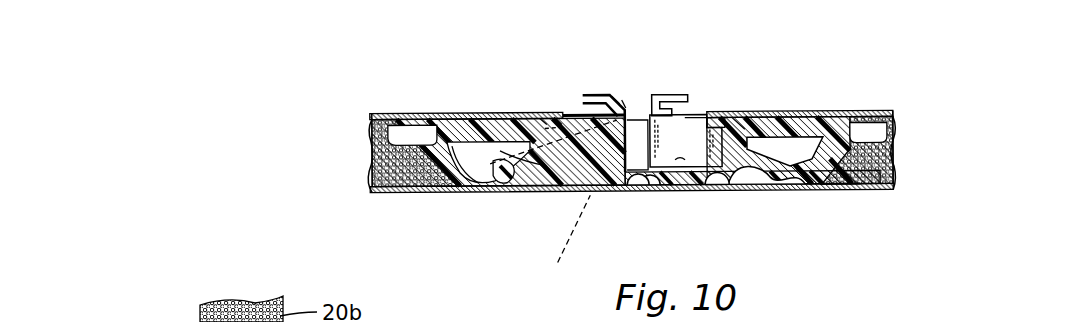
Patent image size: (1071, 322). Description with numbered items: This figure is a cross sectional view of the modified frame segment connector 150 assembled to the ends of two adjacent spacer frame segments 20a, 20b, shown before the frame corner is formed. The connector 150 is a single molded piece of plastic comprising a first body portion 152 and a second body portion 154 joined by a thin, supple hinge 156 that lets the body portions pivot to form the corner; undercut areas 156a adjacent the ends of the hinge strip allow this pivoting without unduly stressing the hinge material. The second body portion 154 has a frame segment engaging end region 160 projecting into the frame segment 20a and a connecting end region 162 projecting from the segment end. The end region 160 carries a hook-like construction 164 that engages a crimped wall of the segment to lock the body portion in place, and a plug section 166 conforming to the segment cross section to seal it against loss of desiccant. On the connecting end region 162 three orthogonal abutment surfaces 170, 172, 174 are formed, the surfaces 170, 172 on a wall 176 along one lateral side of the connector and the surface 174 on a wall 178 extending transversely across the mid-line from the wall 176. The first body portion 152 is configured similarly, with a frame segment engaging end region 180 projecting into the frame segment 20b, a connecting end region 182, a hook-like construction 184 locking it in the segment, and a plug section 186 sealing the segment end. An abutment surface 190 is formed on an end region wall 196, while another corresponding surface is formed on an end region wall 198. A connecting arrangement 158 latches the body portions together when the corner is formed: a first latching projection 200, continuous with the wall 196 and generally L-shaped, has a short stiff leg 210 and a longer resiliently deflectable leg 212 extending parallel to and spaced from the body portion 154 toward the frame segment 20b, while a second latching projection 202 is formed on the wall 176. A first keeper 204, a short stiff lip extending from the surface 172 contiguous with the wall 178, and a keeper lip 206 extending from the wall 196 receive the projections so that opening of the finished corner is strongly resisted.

The spacer frame segment 20a is at (842, 112).
The spacer frame segment 20b is at (415, 112).
The frame segment connector 150 is at (682, 54).
The first body portion 152 is at (565, 197).
The second body portion 154 is at (705, 195).
The hinge 156 is at (657, 190).
The undercut areas 156a is at (636, 192).
The connecting arrangement 158 is at (617, 81).
The frame segment engaging end region 160 is at (865, 112).
The connecting end region 162 is at (740, 115).
The hook-like construction 164 is at (827, 192).
The plug section 166 is at (732, 182).
The abutment surface 170 is at (637, 150).
The abutment surface 172 is at (686, 140).
The abutment surface 174 is at (712, 162).
The wall 176 is at (687, 123).
The wall 178 is at (800, 192).
The frame segment engaging end region 180 is at (490, 112).
The connecting end region 182 is at (533, 193).
The hook-like construction 184 is at (443, 193).
The plug section 186 is at (545, 114).
The abutment surface 190 is at (624, 100).
The end region wall 196 is at (558, 114).
The end region wall 198 is at (552, 250).
The first latching projection 200 is at (603, 70).
The second latching projection 202 is at (663, 97).
The first keeper 204 is at (707, 117).
The keeper lip 206 is at (480, 180).
The short stiff leg 210 is at (553, 142).
The resiliently deflectable leg 212 is at (548, 128).